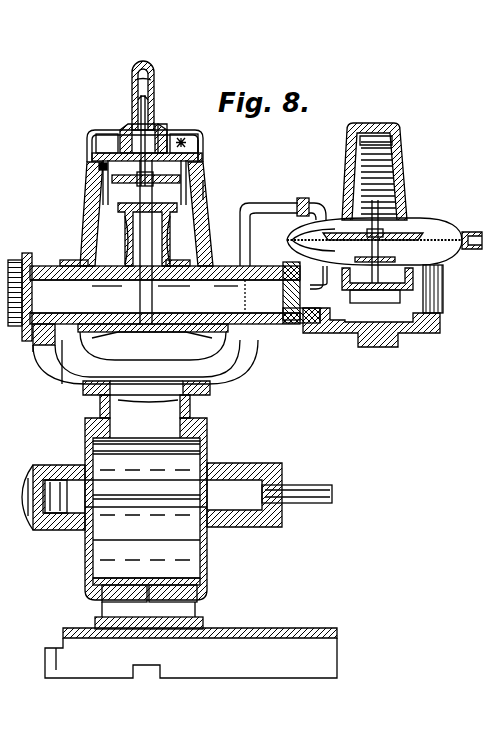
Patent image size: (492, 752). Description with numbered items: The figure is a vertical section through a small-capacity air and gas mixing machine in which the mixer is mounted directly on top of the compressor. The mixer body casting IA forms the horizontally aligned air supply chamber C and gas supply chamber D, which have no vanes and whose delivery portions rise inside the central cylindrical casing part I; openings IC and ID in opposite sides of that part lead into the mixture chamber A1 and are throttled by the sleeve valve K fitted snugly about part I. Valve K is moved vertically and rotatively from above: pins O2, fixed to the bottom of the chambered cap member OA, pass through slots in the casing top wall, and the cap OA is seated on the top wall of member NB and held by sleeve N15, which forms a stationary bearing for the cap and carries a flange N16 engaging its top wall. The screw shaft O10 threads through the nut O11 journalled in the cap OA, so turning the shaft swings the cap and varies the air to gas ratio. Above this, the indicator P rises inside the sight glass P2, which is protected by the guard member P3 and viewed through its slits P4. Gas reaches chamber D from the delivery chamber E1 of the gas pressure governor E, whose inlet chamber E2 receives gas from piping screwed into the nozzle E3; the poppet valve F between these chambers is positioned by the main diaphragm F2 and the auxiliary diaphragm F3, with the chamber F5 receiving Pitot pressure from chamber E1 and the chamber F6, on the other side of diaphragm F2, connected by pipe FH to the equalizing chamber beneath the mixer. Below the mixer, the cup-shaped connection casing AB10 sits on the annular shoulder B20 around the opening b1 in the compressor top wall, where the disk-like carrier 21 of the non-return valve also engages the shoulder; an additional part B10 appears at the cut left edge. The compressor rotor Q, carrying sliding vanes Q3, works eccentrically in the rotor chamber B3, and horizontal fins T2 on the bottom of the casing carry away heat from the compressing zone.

The indicator P is at (157, 100).
The sight glass P2 is at (152, 72).
The tubular metallic guard member P3 is at (147, 64).
The vertical slits P4 is at (134, 82).
The circumferential rib or flange N16 is at (122, 128).
The sleeve member N15 is at (168, 128).
The chambered cap member OA is at (88, 146).
The pins O2 is at (96, 170).
The vertical cylindrical body or nut O11 is at (186, 134).
The screw shaft O10 is at (205, 150).
The member NB is at (214, 196).
The mixer outlet or mixture chamber A1 is at (88, 196).
The uprising central cylindrical casing portion I is at (118, 228).
The tubular or sleeve valve K is at (176, 214).
The air inlet or supply chamber C is at (164, 299).
The opening IC is at (107, 296).
The opening ID is at (174, 296).
The gas inlet or supply chamber D is at (226, 296).
The connection casing AB10 is at (238, 378).
The valve carrier part 21 is at (16, 358).
The bowl wall B10 is at (31, 365).
The annular flange or shoulder B20 is at (92, 394).
The opening b1 is at (193, 395).
The rotor Q is at (146, 509).
The horizontal ribs or fins T2 is at (196, 595).
The blade or vane Q3 is at (93, 542).
The rotor chamber B3 is at (100, 582).
The mixer body casting IA is at (269, 226).
The pipe FH is at (300, 200).
The diaphragm chamber F6 is at (418, 222).
The auxiliary diaphragm F3 is at (318, 244).
The chamber F5 is at (440, 252).
The main governor diaphragm F2 is at (450, 260).
The disc or poppet valve F is at (376, 292).
The delivery chamber E1 is at (328, 281).
The internally threaded inlet nozzle E3 is at (440, 322).
The inlet chamber E2 is at (355, 325).
The gas pressure governor E is at (326, 336).